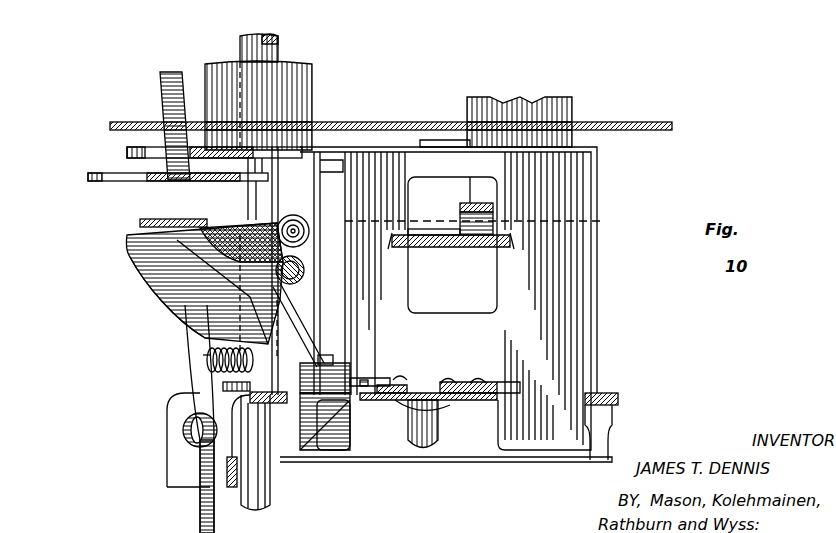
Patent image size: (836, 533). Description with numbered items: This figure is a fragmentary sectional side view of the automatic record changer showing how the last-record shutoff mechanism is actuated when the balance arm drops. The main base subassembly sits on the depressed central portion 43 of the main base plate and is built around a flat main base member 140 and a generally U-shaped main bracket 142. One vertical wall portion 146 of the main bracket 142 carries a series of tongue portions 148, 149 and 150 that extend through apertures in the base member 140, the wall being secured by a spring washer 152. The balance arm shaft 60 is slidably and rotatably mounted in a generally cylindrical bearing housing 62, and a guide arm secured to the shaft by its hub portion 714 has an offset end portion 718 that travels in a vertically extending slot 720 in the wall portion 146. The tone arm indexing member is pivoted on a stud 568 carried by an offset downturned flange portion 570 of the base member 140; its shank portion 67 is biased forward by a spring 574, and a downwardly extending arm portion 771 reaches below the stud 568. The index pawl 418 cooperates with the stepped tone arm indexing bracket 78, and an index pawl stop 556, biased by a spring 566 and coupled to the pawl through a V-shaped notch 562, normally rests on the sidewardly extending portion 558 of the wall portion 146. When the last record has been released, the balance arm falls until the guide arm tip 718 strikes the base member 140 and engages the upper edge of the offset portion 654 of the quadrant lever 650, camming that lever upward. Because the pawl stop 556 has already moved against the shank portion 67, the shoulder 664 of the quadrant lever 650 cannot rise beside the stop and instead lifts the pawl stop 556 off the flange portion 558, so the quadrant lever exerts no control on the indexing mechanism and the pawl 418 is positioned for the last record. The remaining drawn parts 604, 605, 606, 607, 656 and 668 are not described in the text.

The depressed central portion 43 is at (391, 112).
The balance arm shaft 60 is at (283, 22).
The bearing housing 62 is at (323, 50).
The shank portion 67 is at (190, 58).
The tone arm indexing bracket 78 is at (572, 104).
The main bracket 142 is at (440, 142).
The index pawl 418 is at (97, 173).
The V-shaped notch 562 is at (296, 215).
The vertically extending slot 720 is at (345, 168).
The index pawl stop 556 is at (143, 222).
The sidewardly extending portion 558 is at (127, 262).
The shoulder 664 is at (233, 247).
The spring 566 is at (222, 292).
The quadrant lever 650 is at (160, 297).
The offset portion 654 is at (300, 312).
The spring 574 is at (203, 350).
The hub portion 714 is at (222, 386).
The stud 568 is at (190, 428).
The offset downturned flange portion 570 is at (170, 458).
The downwardly extending arm portion 771 is at (200, 518).
The offset end portion 718 is at (330, 355).
The pin 668 is at (366, 378).
The piston 606 is at (392, 378).
The plate 607 is at (408, 385).
The washer 605 is at (455, 382).
The plate 604 is at (480, 386).
The vertical wall portion 146 is at (586, 338).
The main base member 140 is at (604, 393).
The tongue portion 148 is at (580, 427).
The wedge 656 is at (310, 450).
The tongue portion 150 is at (346, 450).
The tongue portion 149 is at (425, 452).
The spring washer 152 is at (455, 412).